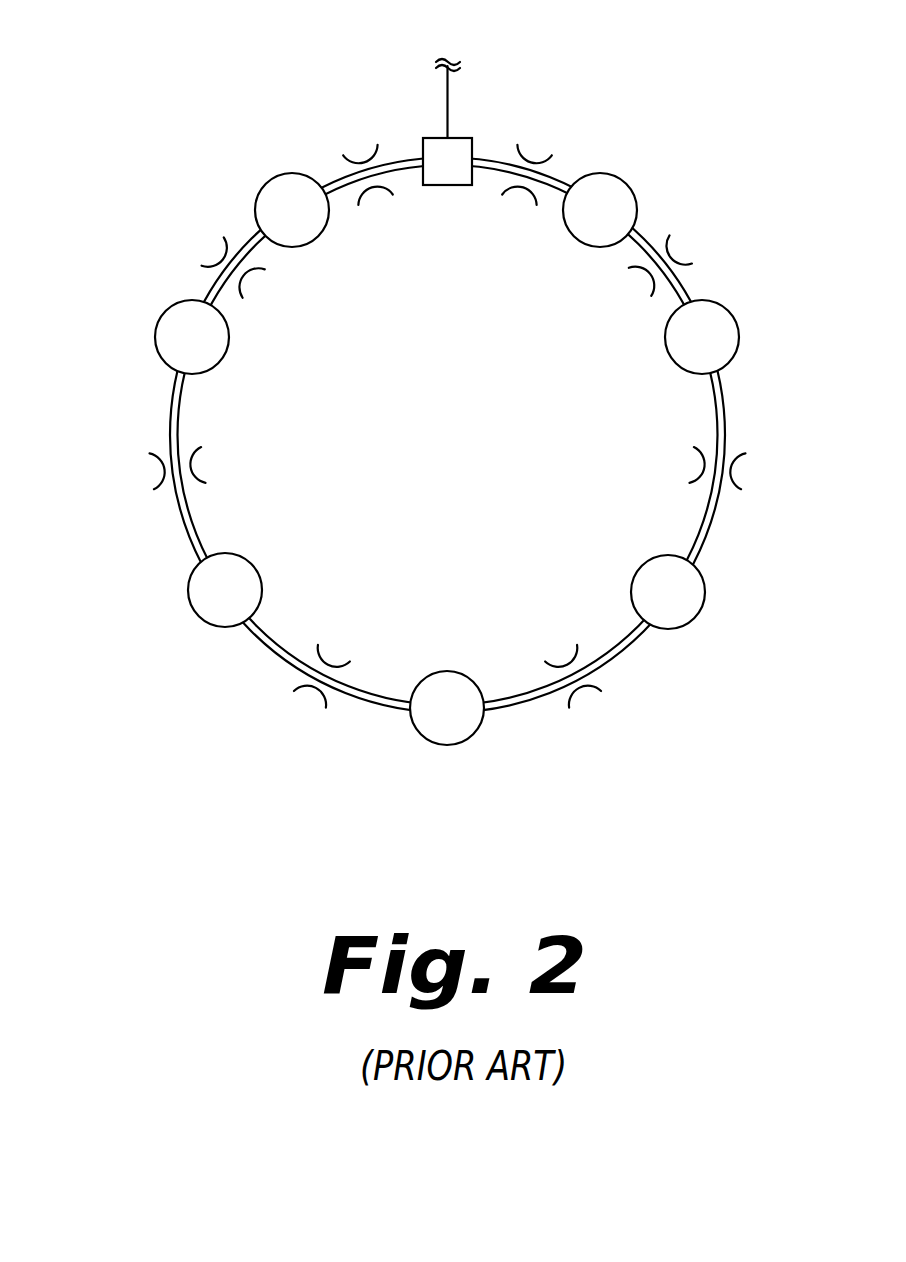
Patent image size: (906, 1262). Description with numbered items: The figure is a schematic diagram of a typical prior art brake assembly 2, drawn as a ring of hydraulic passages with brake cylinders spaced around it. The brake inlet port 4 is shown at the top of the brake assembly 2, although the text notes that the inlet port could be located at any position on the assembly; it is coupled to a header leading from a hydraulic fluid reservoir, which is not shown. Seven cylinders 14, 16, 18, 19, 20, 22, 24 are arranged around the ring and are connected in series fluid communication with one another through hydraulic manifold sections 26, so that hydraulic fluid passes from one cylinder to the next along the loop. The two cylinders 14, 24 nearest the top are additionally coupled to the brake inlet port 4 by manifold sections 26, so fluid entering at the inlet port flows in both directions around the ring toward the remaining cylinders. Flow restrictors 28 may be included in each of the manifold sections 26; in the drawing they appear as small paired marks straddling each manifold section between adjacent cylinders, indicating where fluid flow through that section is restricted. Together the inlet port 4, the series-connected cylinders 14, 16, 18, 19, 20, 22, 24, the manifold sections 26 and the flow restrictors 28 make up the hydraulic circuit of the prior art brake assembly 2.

The brake assembly 2 is at (726, 78).
The brake inlet port 4 is at (472, 150).
The cylinder 14 is at (273, 178).
The cylinder 16 is at (159, 320).
The cylinder 18 is at (201, 618).
The cylinder 19 is at (471, 736).
The cylinder 20 is at (693, 619).
The cylinder 22 is at (734, 318).
The cylinder 24 is at (621, 180).
The hydraulic manifold section 26 is at (402, 157).
The flow restrictor 28 is at (362, 154).